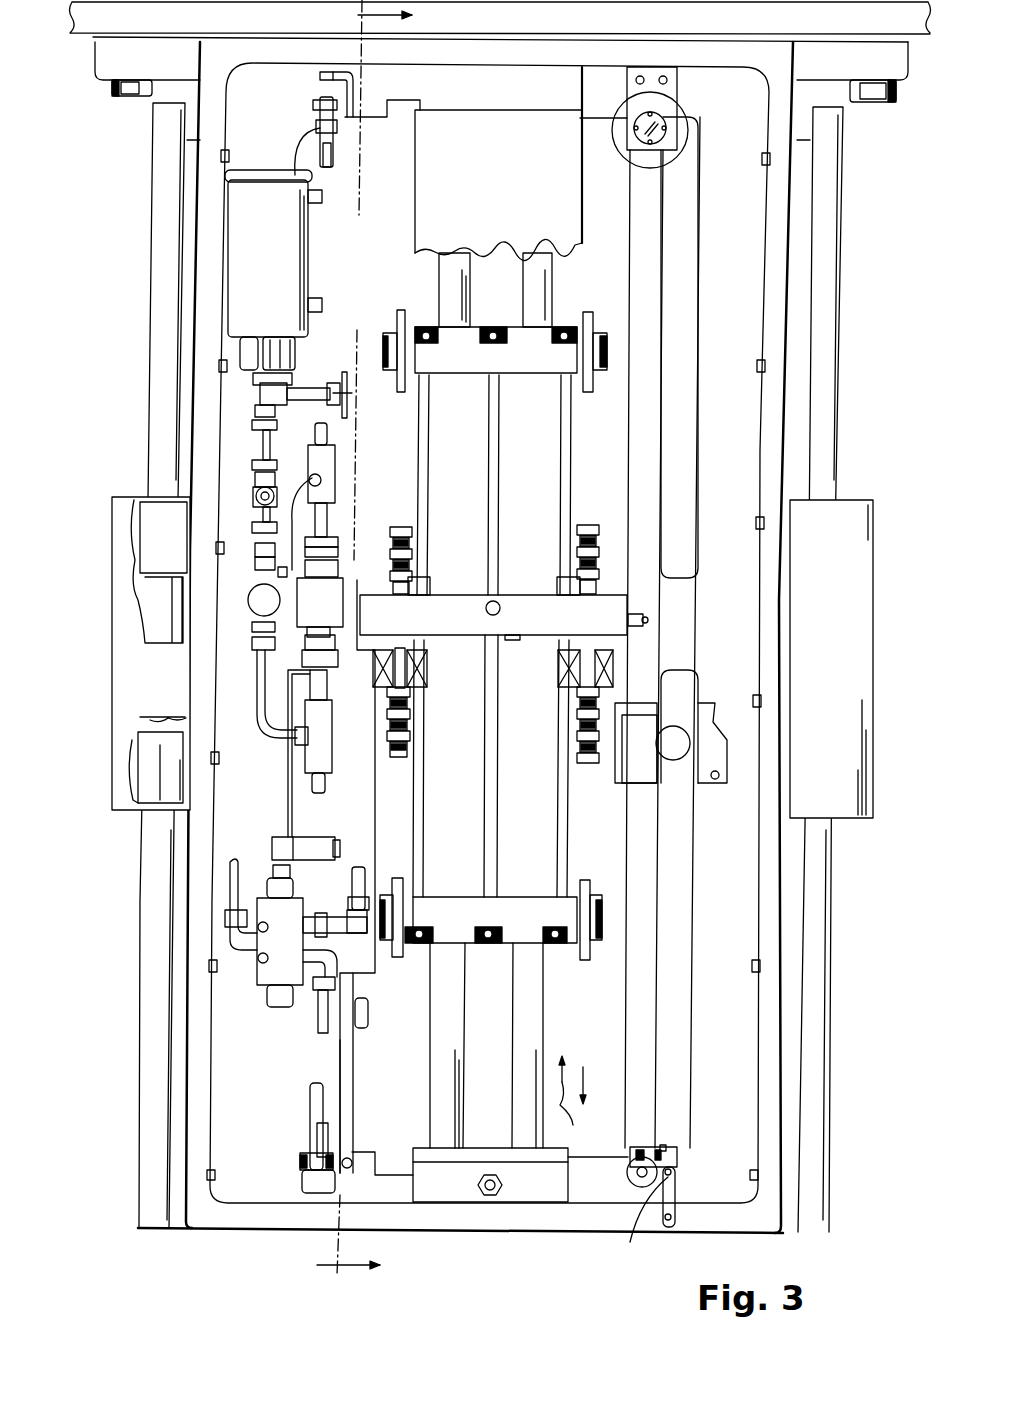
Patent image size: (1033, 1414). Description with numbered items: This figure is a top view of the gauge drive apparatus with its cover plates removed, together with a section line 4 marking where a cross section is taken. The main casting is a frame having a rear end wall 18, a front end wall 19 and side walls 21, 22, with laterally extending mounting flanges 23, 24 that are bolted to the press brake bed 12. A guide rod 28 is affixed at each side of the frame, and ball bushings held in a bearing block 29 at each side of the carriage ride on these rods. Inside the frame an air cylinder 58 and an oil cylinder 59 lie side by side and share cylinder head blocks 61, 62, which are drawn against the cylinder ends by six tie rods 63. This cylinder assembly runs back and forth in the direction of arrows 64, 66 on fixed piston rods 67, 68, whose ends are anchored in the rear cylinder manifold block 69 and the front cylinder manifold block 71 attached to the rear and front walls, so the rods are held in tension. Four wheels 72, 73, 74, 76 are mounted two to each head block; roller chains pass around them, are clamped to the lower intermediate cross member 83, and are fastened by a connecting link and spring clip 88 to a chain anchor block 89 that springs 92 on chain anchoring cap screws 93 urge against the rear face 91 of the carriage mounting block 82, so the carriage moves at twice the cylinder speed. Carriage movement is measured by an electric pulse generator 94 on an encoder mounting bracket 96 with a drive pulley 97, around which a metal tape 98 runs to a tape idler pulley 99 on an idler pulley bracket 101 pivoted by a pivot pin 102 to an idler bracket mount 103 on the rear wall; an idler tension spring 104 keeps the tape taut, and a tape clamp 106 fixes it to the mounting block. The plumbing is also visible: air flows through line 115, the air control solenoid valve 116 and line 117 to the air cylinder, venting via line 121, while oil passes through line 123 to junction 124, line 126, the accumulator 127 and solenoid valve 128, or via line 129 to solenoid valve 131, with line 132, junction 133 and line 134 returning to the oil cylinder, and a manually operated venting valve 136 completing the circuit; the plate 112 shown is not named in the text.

The section line 4 is at (364, 644).
The press brake bed 12 is at (94, 14).
The rear end wall 18 is at (260, 1222).
The front end wall 19 is at (296, 62).
The side wall 21 is at (207, 225).
The side wall 22 is at (775, 300).
The mounting flange 23 is at (113, 67).
The mounting flange 24 is at (880, 72).
The guide rod 28 is at (157, 407).
The bearing block 29 is at (125, 668).
The air cylinder 58 is at (465, 858).
The oil cylinder 59 is at (540, 858).
The cylinder head block 61 is at (538, 337).
The cylinder head block 62 is at (530, 932).
The tie rods 63 is at (418, 802).
The arrow 64 is at (583, 1072).
The arrow 66 is at (581, 1099).
The piston rod 67 is at (452, 1040).
The piston rod 68 is at (532, 1028).
The rear cylinder manifold block 69 is at (405, 1192).
The front cylinder manifold block 71 is at (413, 82).
The wheel 72 is at (393, 953).
The wheel 73 is at (597, 952).
The wheel 74 is at (400, 320).
The wheel 76 is at (586, 395).
The carriage mounting block 82 is at (604, 628).
The lower intermediate cross member 83 is at (370, 577).
The connecting link and spring clip 88 is at (423, 673).
The chain anchor block 89 is at (603, 645).
The rear face 91 is at (512, 640).
The springs 92 is at (427, 667).
The chain anchoring cap screw 93 is at (427, 675).
The electric pulse generator 94 is at (688, 115).
The encoder mounting bracket 96 is at (661, 103).
The drive pulley 97 is at (663, 137).
The metal tape 98 is at (665, 235).
The tape idler pulley 99 is at (628, 1173).
The idler pulley bracket 101 is at (677, 1162).
The pivot pin 102 is at (636, 1222).
The idler bracket mount 103 is at (675, 1193).
The idler tension spring 104 is at (663, 1150).
The tape clamp 106 is at (645, 617).
The mounting plate 112 is at (547, 123).
The line 115 is at (240, 875).
The air control solenoid valve 116 is at (281, 933).
The line 117 is at (328, 128).
The line 121 is at (317, 1015).
The line 123 is at (320, 154).
The junction 124 is at (323, 485).
The line 126 is at (293, 512).
The accumulator 127 is at (283, 258).
The solenoid valve 128 is at (252, 598).
The line 129 is at (323, 522).
The solenoid valve 131 is at (325, 613).
The line 132 is at (280, 738).
The junction 133 is at (323, 752).
The line 134 is at (322, 787).
The venting valve 136 is at (305, 392).